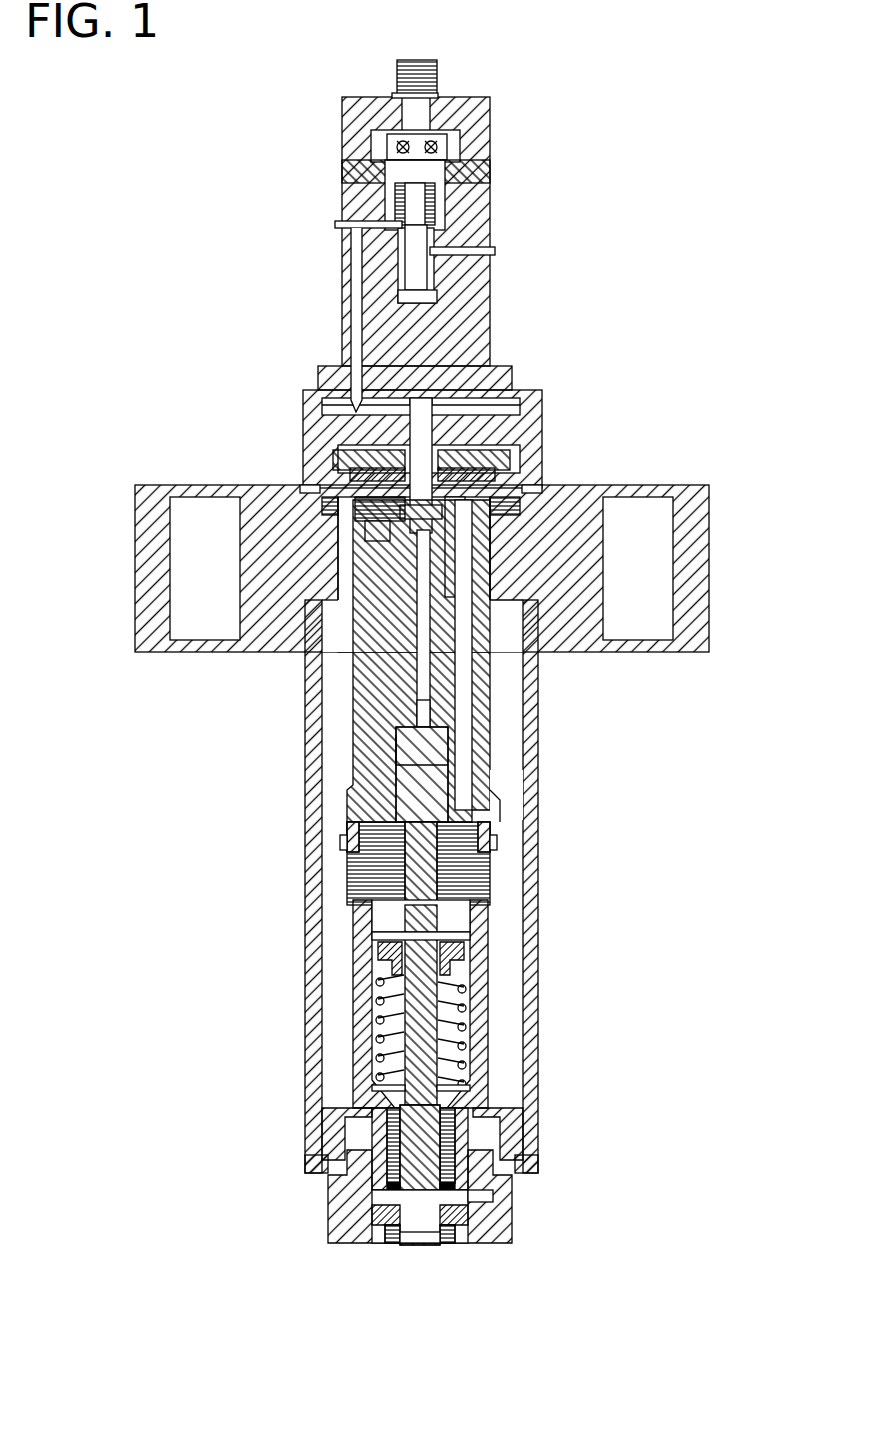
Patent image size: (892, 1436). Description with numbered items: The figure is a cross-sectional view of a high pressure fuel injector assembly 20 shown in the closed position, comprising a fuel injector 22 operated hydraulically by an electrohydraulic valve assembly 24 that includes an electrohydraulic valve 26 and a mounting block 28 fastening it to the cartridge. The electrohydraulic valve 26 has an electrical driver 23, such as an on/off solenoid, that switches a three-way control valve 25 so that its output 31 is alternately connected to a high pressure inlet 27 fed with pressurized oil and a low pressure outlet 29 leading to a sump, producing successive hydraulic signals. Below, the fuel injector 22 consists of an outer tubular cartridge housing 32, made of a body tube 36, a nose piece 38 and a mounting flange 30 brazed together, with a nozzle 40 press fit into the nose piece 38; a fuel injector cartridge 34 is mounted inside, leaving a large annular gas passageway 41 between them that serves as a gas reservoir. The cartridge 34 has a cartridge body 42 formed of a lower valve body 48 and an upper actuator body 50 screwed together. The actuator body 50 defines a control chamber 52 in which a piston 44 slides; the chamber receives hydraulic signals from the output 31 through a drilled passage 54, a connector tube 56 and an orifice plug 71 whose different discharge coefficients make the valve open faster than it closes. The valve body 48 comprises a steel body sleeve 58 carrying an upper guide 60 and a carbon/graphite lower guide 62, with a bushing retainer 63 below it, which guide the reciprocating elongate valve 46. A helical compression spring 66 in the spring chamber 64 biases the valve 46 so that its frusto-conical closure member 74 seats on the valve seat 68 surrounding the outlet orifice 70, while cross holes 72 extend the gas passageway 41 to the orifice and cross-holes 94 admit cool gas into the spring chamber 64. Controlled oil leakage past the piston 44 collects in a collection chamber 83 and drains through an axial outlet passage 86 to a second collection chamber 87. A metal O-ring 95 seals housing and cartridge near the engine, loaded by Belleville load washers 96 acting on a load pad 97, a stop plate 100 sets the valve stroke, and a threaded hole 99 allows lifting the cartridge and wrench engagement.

The high pressure fuel injector assembly 20 is at (265, 115).
The fuel injector 22 is at (245, 1012).
The electrical driver 23 is at (430, 135).
The electrohydraulic valve assembly 24 is at (315, 250).
The three-way control valve 25 is at (445, 205).
The electrohydraulic valve 26 is at (522, 115).
The high pressure inlet 27 is at (462, 250).
The mounting block 28 is at (520, 415).
The low pressure outlet 29 is at (345, 218).
The mounting flange 30 is at (688, 565).
The output 31 is at (355, 362).
The cartridge housing 32 is at (300, 835).
The fuel injector cartridge 34 is at (355, 690).
The body tube 36 is at (330, 962).
The nose piece 38 is at (332, 1212).
The nozzle 40 is at (385, 1247).
The gas passageway 41 is at (575, 605).
The cartridge body 42 is at (502, 790).
The piston 44 is at (402, 752).
The valve 46 is at (340, 1122).
The valve body 48 is at (505, 885).
The actuator body 50 is at (492, 680).
The control chamber 52 is at (452, 715).
The drilled passage 54 is at (372, 618).
The connector tube 56 is at (325, 440).
The body sleeve 58 is at (492, 1032).
The upper guide 60 is at (480, 842).
The lower guide 62 is at (477, 1132).
The bushing retainer 63 is at (502, 1182).
The spring chamber 64 is at (385, 947).
The helical compression spring 66 is at (462, 1012).
The valve seat 68 is at (352, 1247).
The outlet orifice 70 is at (440, 1252).
The orifice plug 71 is at (420, 575).
The cross holes 72 is at (340, 1172).
The closure member 74 is at (410, 1247).
The collection chamber 83 is at (392, 785).
The axial outlet passage 86 is at (520, 503).
The second collection chamber 87 is at (450, 472).
The cross-holes 94 is at (362, 1067).
The metal O-ring 95 is at (512, 1222).
The Belleville load washers 96 is at (345, 466).
The load pad 97 is at (455, 470).
The threaded hole 99 is at (270, 522).
The stop plate 100 is at (462, 975).